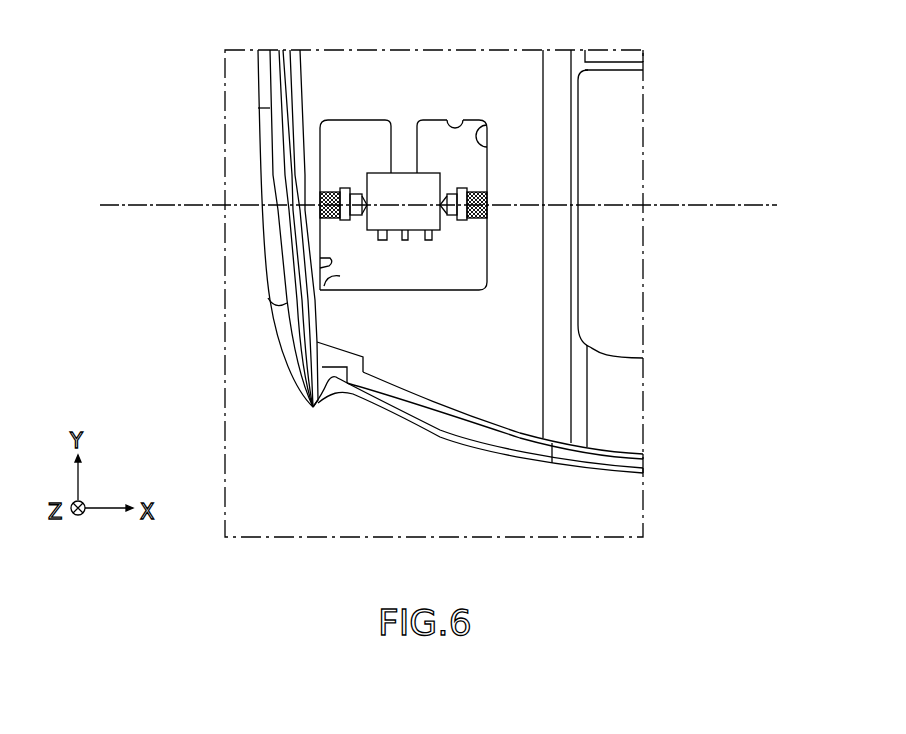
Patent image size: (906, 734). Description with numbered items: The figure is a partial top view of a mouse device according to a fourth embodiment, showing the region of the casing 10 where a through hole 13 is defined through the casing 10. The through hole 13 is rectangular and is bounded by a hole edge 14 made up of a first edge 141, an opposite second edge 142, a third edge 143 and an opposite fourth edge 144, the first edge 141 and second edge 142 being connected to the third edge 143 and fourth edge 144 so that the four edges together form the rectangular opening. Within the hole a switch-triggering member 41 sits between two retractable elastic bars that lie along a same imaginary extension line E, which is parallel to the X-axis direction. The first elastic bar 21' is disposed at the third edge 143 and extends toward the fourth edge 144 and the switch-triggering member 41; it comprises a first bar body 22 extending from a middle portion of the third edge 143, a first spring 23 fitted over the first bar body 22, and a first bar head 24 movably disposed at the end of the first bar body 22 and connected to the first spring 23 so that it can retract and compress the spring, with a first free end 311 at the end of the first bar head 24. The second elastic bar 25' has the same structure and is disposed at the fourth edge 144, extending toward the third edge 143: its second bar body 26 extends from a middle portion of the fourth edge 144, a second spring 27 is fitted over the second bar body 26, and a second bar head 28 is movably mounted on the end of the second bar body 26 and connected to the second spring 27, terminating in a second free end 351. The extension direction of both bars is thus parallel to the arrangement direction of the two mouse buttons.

The casing 10 is at (258, 97).
The through hole 13 is at (367, 137).
The hole edge 14 is at (444, 150).
The switch-triggering member 41 is at (403, 183).
The second edge 142 is at (460, 123).
The third edge 143 is at (483, 123).
The second elastic bar 25' is at (267, 191).
The second bar body 26 is at (320, 197).
The second spring 27 is at (347, 222).
The second bar head 28 is at (360, 214).
The second free end 351 is at (362, 219).
The first elastic bar 21' is at (576, 180).
The first bar body 22 is at (487, 197).
The first spring 23 is at (470, 222).
The first bar head 24 is at (457, 223).
The first free end 311 is at (443, 220).
The fourth edge 144 is at (325, 262).
The first edge 141 is at (337, 275).
The imaginary extension line E is at (752, 205).